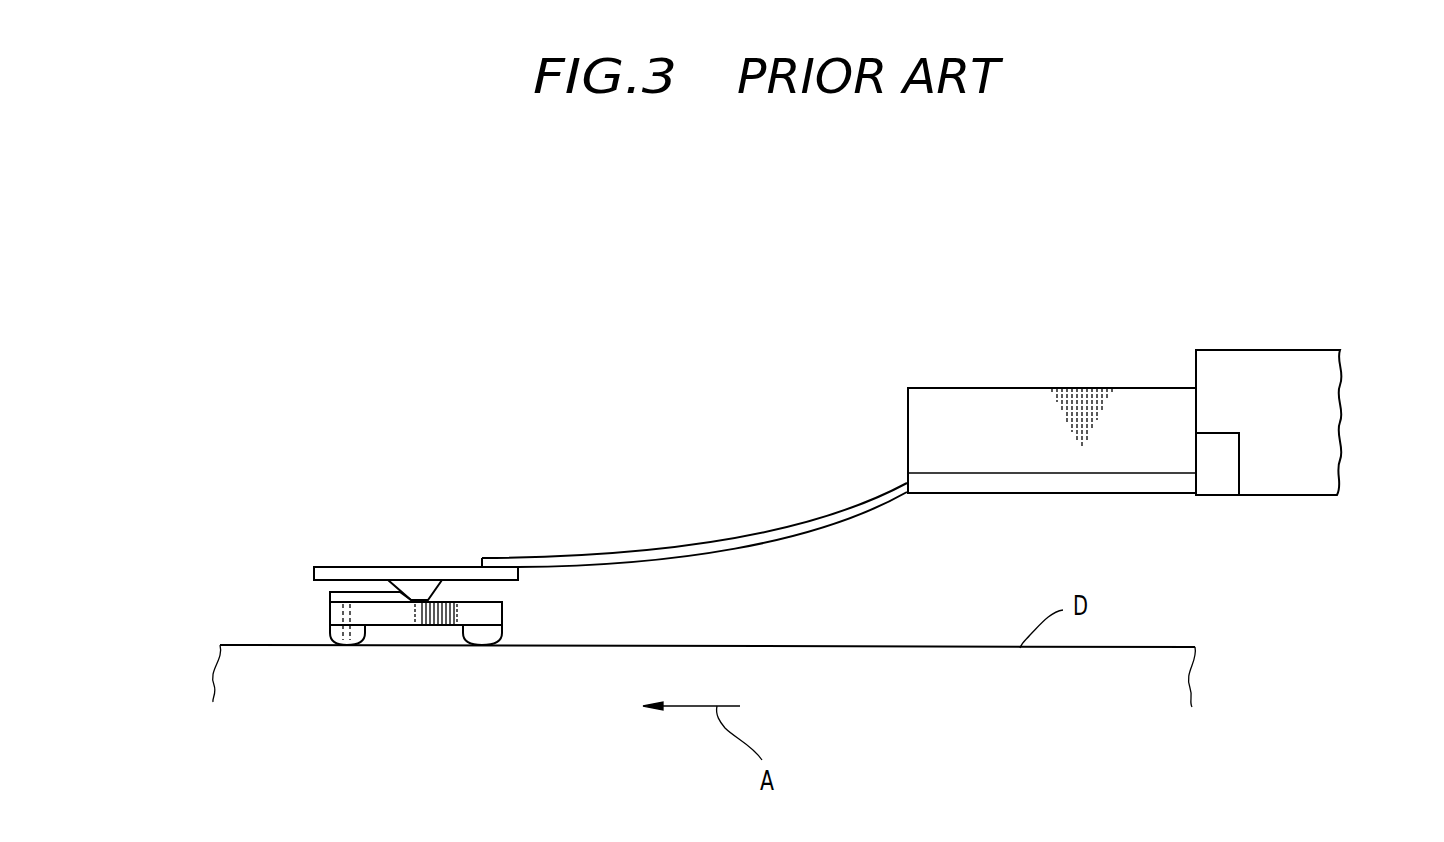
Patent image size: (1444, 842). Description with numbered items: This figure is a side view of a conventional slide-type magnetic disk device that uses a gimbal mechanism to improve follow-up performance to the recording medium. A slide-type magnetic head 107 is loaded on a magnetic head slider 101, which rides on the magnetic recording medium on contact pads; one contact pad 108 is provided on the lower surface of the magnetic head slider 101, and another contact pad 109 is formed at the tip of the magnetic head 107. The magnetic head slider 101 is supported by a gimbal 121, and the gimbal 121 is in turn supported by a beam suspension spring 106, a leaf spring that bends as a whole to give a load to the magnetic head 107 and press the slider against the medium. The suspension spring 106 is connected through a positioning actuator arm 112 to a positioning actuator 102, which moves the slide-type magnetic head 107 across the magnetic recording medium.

The magnetic head slider 101 is at (447, 602).
The positioning actuator 102 is at (1252, 360).
The suspension spring 106 is at (720, 542).
The slide-type magnetic head 107 is at (332, 592).
The contact pad 108 is at (328, 640).
The contact pad 109 is at (480, 635).
The positioning actuator arm 112 is at (968, 402).
The gimbal 121 is at (377, 562).